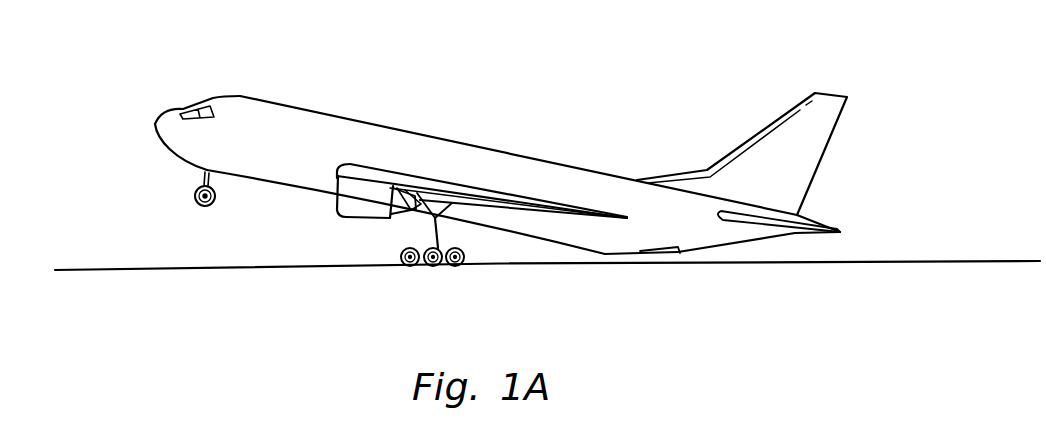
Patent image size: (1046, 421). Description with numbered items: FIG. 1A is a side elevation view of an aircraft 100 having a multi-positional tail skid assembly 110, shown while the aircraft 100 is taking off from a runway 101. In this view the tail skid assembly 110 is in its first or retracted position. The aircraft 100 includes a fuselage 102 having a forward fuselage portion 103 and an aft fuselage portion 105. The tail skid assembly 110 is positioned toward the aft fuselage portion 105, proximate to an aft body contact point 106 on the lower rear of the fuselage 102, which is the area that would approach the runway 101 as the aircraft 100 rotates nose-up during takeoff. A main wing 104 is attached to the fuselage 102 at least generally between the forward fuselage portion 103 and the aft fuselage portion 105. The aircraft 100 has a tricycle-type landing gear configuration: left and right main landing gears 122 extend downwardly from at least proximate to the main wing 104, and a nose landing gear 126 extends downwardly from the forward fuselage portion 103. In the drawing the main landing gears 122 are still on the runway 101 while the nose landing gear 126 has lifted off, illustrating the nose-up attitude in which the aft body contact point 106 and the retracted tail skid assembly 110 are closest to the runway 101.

The aircraft 100 is at (595, 48).
The runway 101 is at (115, 268).
The fuselage 102 is at (427, 132).
The forward fuselage portion 103 is at (292, 107).
The main wing 104 is at (478, 187).
The aft fuselage portion 105 is at (577, 168).
The aft body contact point 106 is at (607, 254).
The multi-positional tail skid assembly 110 is at (683, 255).
The main landing gears 122 is at (410, 230).
The nose landing gear 126 is at (183, 176).